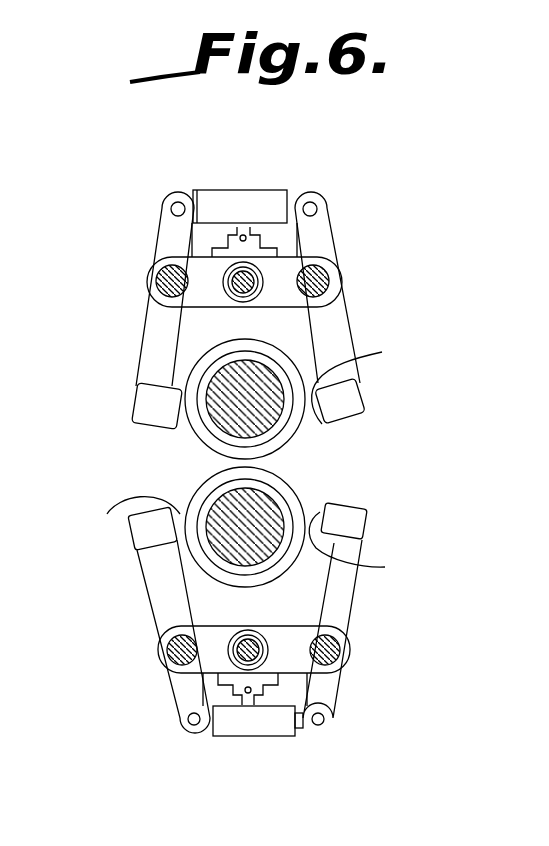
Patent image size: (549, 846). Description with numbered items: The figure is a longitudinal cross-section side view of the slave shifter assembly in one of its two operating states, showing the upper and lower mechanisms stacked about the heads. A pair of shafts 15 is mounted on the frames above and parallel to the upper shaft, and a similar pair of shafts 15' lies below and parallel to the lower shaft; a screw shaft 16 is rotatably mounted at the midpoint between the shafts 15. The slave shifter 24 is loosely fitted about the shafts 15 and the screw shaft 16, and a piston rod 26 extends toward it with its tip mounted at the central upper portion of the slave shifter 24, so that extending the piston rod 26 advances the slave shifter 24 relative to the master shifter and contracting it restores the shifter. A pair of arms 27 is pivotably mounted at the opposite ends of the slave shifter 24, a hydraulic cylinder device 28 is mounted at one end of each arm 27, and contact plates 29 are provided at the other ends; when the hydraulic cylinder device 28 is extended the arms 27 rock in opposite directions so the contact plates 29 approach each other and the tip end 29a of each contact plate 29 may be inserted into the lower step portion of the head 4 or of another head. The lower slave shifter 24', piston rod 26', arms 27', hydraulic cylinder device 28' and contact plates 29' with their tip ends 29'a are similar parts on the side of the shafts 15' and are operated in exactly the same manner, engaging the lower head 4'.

The head 4 is at (261, 405).
The ring 4' is at (279, 522).
The shafts 15 is at (246, 282).
The shafts 15' is at (258, 661).
The screw shaft 16 is at (240, 292).
The slave shifter 24 is at (256, 285).
The slave shifter 24' is at (263, 644).
The piston rod 26 is at (295, 192).
The piston rod 26' is at (264, 736).
The arms 27 is at (263, 471).
The arms 27' is at (165, 640).
The hydraulic cylinder device 28 is at (244, 200).
The hydraulic cylinder device 28' is at (228, 740).
The contact plates 29 is at (255, 417).
The contact plates 29' is at (233, 554).
The tip end 29a is at (60, 492).
The pad face 29'a is at (240, 546).